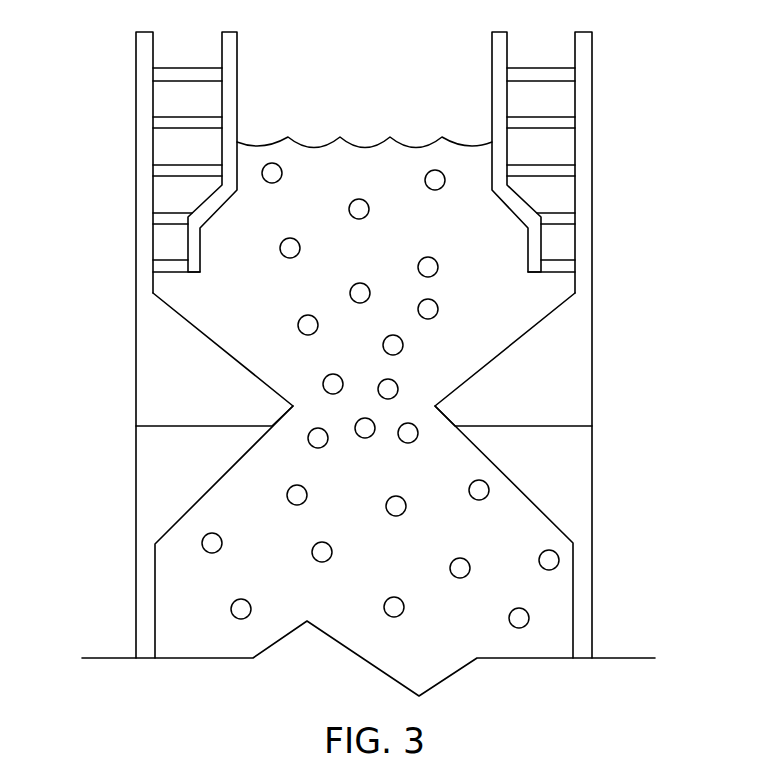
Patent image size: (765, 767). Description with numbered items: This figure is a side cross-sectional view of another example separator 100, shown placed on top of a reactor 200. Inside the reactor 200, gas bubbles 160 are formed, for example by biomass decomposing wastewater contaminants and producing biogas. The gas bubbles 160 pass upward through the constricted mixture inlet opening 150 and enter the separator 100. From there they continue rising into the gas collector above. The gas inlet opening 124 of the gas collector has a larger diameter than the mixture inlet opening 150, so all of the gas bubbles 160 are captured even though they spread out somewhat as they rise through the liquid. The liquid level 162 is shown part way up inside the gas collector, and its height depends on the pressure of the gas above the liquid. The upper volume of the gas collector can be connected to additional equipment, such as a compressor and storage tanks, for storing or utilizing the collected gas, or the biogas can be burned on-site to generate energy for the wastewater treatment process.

The separator 100 is at (586, 48).
The gas inlet opening 124 is at (489, 290).
The mixture inlet opening 150 is at (306, 390).
The gas bubbles 160 is at (272, 165).
The liquid level 162 is at (360, 148).
The reactor 200 is at (585, 469).